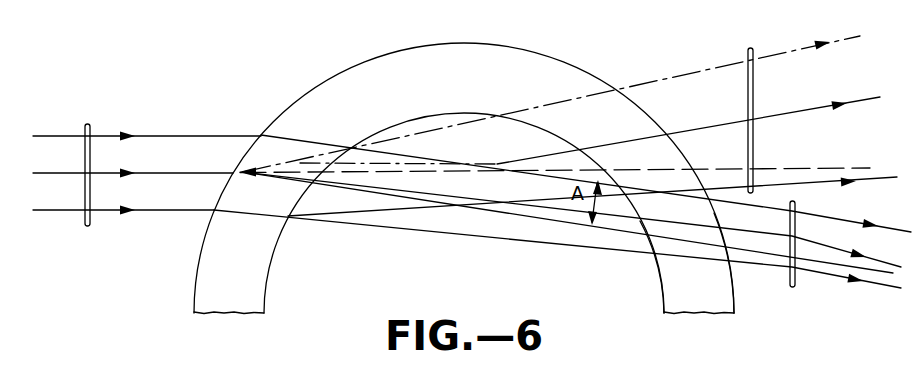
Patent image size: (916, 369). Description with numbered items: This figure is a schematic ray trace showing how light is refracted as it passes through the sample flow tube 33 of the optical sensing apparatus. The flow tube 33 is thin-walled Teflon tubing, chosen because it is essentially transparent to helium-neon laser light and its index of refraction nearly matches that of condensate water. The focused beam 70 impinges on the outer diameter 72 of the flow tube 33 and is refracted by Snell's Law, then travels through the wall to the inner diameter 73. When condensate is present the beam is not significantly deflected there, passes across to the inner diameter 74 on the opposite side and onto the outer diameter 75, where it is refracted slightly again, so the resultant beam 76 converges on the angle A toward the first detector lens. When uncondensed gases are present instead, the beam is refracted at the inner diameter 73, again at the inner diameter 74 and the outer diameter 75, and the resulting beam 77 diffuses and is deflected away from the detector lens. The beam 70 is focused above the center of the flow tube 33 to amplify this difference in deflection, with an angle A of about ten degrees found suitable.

The flow tube 33 is at (336, 82).
The beam 70 is at (89, 125).
The outer diameter 72 is at (263, 122).
The inner diameter 73 is at (377, 133).
The inner diameter 74 is at (667, 298).
The outer diameter 75 is at (737, 272).
The resultant beam 76 is at (794, 287).
The beam 77 is at (750, 48).